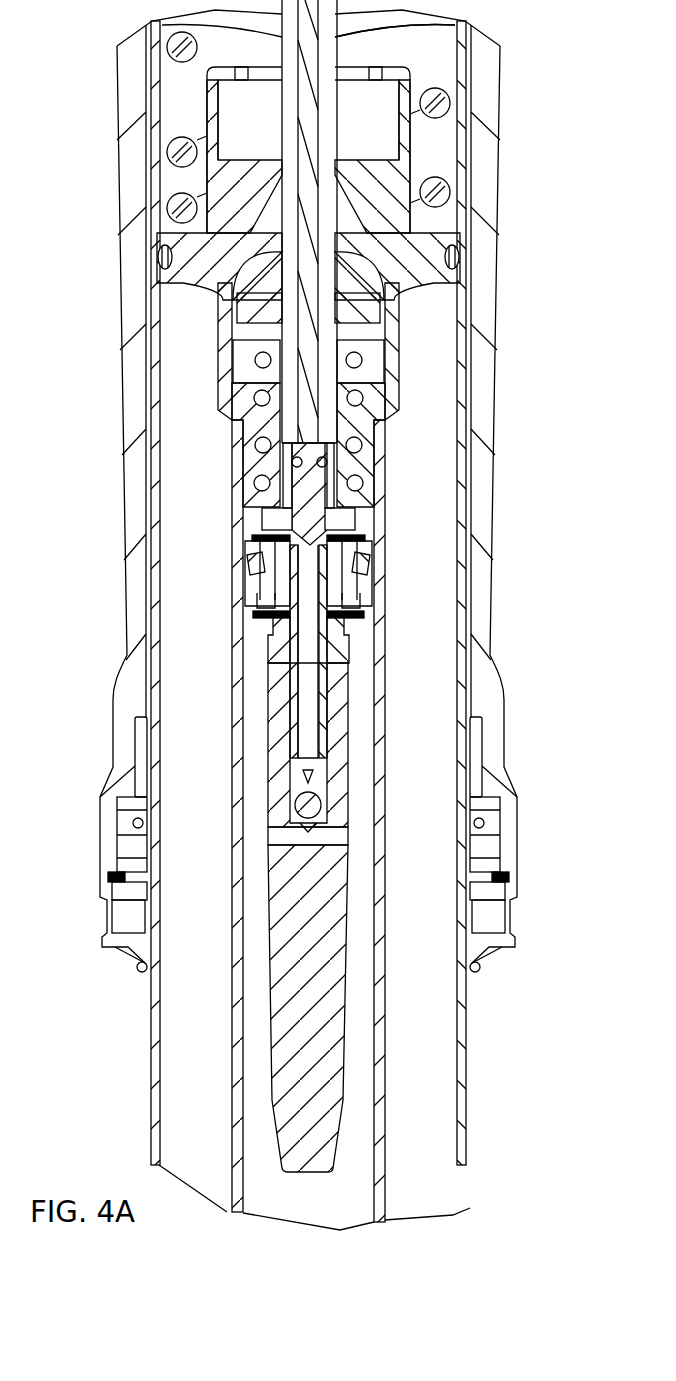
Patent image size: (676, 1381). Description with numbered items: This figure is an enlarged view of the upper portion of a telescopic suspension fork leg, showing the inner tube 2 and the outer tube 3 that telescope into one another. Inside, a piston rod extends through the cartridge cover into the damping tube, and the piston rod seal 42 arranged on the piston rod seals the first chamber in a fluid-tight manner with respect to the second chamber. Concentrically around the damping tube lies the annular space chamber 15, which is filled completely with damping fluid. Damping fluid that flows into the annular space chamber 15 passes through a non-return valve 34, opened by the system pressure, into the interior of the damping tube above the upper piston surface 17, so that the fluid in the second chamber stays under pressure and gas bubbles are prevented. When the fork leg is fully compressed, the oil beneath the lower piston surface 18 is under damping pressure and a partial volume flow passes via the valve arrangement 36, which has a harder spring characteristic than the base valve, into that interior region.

The inner tube 2 is at (465, 1083).
The outer tube 3 is at (483, 577).
The annular space chamber 15 is at (442, 987).
The upper piston surface 17 is at (256, 556).
The lower piston surface 18 is at (248, 602).
The non-return valve 34 is at (378, 326).
The valve arrangement 36 is at (347, 537).
The piston rod seal 42 is at (345, 212).